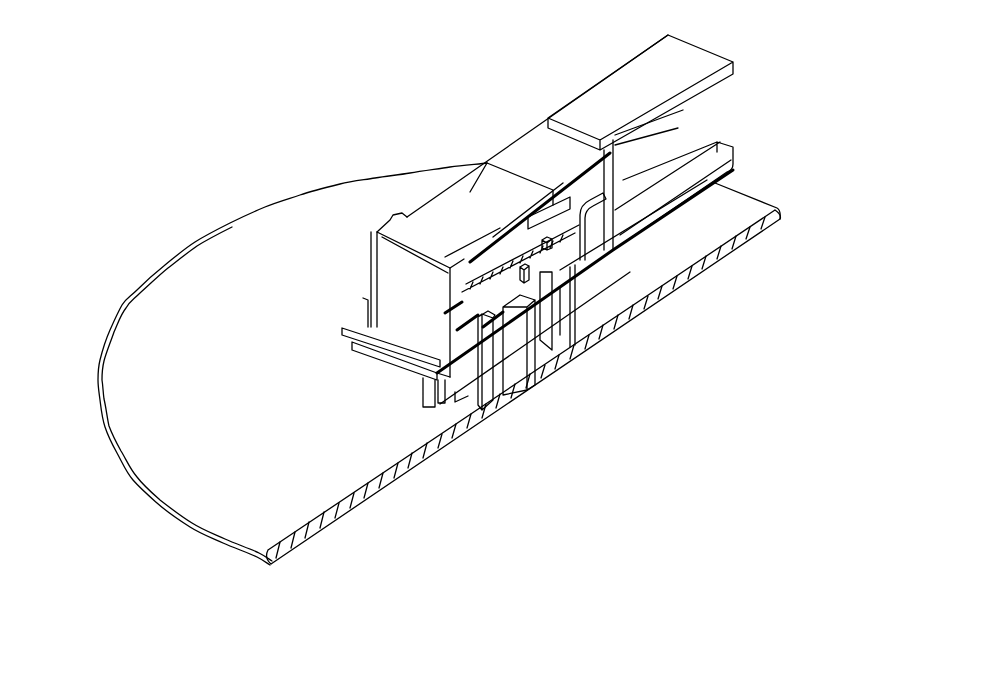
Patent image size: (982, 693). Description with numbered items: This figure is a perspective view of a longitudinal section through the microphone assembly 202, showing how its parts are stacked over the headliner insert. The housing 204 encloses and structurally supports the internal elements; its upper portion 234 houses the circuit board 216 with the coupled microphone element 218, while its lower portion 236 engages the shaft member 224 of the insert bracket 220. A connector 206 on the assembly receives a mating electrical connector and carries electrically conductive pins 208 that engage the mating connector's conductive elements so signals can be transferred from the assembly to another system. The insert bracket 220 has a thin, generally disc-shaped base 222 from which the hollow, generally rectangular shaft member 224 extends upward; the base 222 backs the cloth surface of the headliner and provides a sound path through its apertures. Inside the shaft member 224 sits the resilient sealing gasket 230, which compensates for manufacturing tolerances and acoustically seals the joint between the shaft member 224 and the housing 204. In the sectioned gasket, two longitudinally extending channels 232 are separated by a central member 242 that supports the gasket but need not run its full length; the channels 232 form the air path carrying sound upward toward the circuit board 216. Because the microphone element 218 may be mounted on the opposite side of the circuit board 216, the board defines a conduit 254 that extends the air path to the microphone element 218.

The microphone assembly 202 is at (207, 173).
The housing 204 is at (393, 283).
The connector 206 is at (650, 70).
The electrically conductive pins 208 is at (667, 160).
The circuit board 216 is at (567, 262).
The microphone element 218 is at (523, 225).
The insert bracket 220 is at (621, 355).
The base 222 is at (212, 406).
The shaft member 224 is at (481, 386).
The sealing gasket 230 is at (563, 319).
The channel 232 is at (537, 313).
The upper portion 234 is at (408, 308).
The lower portion 236 is at (463, 378).
The central member 242 is at (522, 345).
The conduit 254 is at (530, 270).